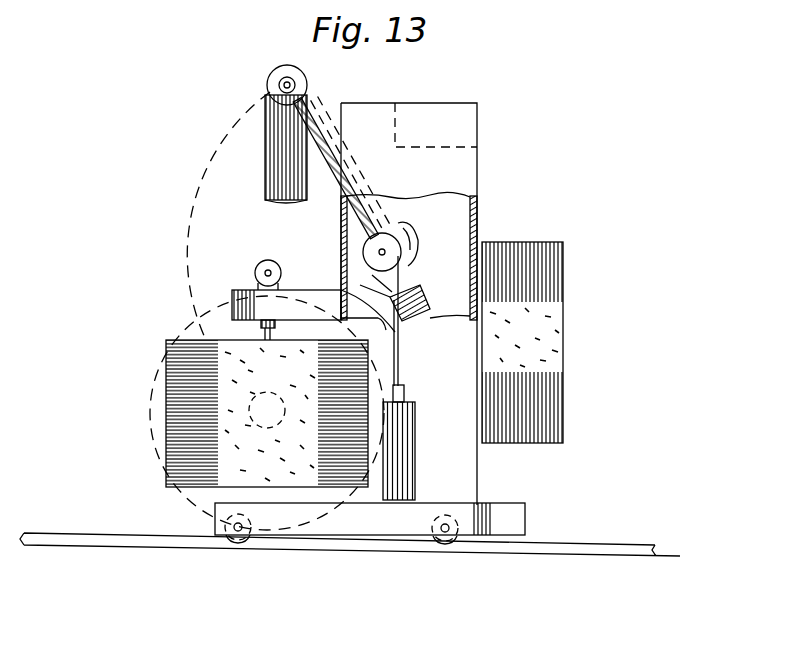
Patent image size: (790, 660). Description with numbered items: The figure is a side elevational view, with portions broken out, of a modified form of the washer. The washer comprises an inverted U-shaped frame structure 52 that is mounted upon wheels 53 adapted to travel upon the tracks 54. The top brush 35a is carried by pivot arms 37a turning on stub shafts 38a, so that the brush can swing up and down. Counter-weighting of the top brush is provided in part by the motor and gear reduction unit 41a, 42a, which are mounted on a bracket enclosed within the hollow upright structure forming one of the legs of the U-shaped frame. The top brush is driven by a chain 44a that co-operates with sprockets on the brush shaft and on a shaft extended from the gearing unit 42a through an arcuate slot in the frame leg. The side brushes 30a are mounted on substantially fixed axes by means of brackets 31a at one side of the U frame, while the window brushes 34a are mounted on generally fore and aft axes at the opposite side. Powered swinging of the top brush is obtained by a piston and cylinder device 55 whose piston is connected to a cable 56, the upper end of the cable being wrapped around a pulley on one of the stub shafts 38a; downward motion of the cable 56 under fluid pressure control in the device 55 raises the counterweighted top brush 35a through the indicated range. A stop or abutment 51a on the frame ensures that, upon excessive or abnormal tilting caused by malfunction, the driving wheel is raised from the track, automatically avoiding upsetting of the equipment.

The side brush 30a is at (180, 399).
The bracket 31a is at (232, 292).
The window brush 34a is at (563, 352).
The top brush 35a is at (272, 158).
The pivot arm 37a is at (268, 80).
The stub shaft 38a is at (364, 250).
The motor 41a is at (430, 307).
The gear reduction unit 42a is at (410, 270).
The chain 44a is at (318, 110).
The stop or abutment 51a is at (520, 521).
The inverted U-shaped frame structure 52 is at (478, 172).
The wheel 53 is at (237, 546).
The track 54 is at (146, 532).
The piston and cylinder device 55 is at (417, 463).
The cable 56 is at (400, 362).